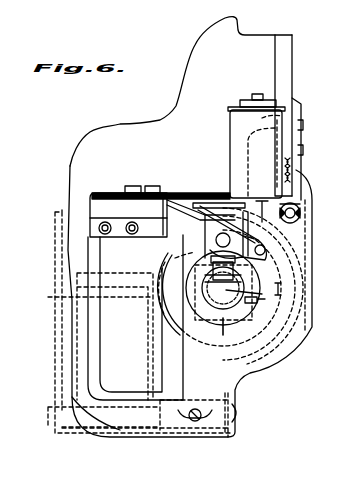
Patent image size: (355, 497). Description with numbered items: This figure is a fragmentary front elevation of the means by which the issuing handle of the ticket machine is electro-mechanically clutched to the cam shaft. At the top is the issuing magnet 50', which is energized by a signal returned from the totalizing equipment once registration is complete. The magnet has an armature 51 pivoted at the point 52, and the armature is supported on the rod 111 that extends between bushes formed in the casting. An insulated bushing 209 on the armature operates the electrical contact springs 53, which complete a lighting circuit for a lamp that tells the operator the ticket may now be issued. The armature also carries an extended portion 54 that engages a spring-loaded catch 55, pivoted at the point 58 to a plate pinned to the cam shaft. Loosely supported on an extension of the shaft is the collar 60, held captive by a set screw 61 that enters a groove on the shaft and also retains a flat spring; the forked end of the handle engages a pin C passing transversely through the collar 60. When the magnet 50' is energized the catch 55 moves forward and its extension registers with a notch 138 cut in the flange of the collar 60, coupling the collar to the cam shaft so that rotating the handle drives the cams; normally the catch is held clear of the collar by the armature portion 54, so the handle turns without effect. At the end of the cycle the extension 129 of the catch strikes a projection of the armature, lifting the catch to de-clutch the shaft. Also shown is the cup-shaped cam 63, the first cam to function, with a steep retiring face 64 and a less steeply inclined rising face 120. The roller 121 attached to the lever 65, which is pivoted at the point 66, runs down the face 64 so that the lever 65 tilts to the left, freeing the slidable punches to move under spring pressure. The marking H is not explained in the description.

The issuing magnet 50' is at (256, 146).
The insulated bushing 209 is at (160, 196).
The electrical contact springs 53 is at (185, 198).
The extended portion of armature 54 is at (207, 202).
The extension of catch 129 is at (243, 228).
The armature 51 is at (264, 216).
The spring-loaded catch 55 is at (250, 240).
The pivot point of catch 58 is at (217, 244).
The notch 138 is at (260, 256).
The rising face of cam 120 is at (264, 280).
The collar 60 is at (225, 293).
The pin C is at (248, 292).
The height mark H is at (282, 288).
The set screw 61 is at (175, 252).
The cup-shaped cam 63 is at (165, 272).
The retiring face of cam 64 is at (210, 340).
The roller 121 is at (150, 312).
The lever 65 is at (55, 332).
The pivot point of lever 66 is at (48, 417).
The rod 111 is at (300, 209).
The pivot point of armature 52 is at (299, 219).